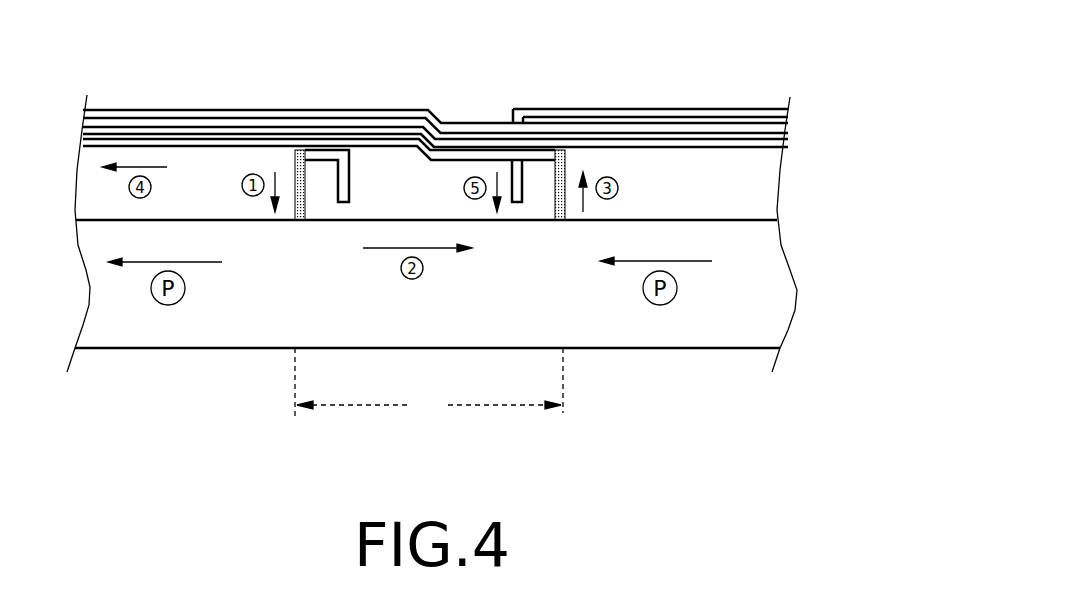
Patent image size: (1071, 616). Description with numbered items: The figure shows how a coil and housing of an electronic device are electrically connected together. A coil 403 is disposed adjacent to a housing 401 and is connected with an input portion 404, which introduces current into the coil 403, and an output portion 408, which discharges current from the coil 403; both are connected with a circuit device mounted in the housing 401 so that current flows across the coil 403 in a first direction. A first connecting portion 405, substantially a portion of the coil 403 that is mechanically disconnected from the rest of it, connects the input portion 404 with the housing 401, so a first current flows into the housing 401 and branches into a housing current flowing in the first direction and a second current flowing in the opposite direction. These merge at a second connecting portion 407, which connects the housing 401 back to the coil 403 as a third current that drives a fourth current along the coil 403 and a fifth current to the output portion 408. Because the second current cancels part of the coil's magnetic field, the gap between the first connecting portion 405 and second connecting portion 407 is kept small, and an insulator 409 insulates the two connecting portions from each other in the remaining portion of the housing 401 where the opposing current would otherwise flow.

The housing 401 is at (180, 323).
The coil 403 is at (727, 86).
The input portion 404 is at (345, 172).
The first connecting portion 405 is at (295, 165).
The second connecting portion 407 is at (567, 165).
The output portion 408 is at (517, 172).
The insulator 409 is at (505, 308).